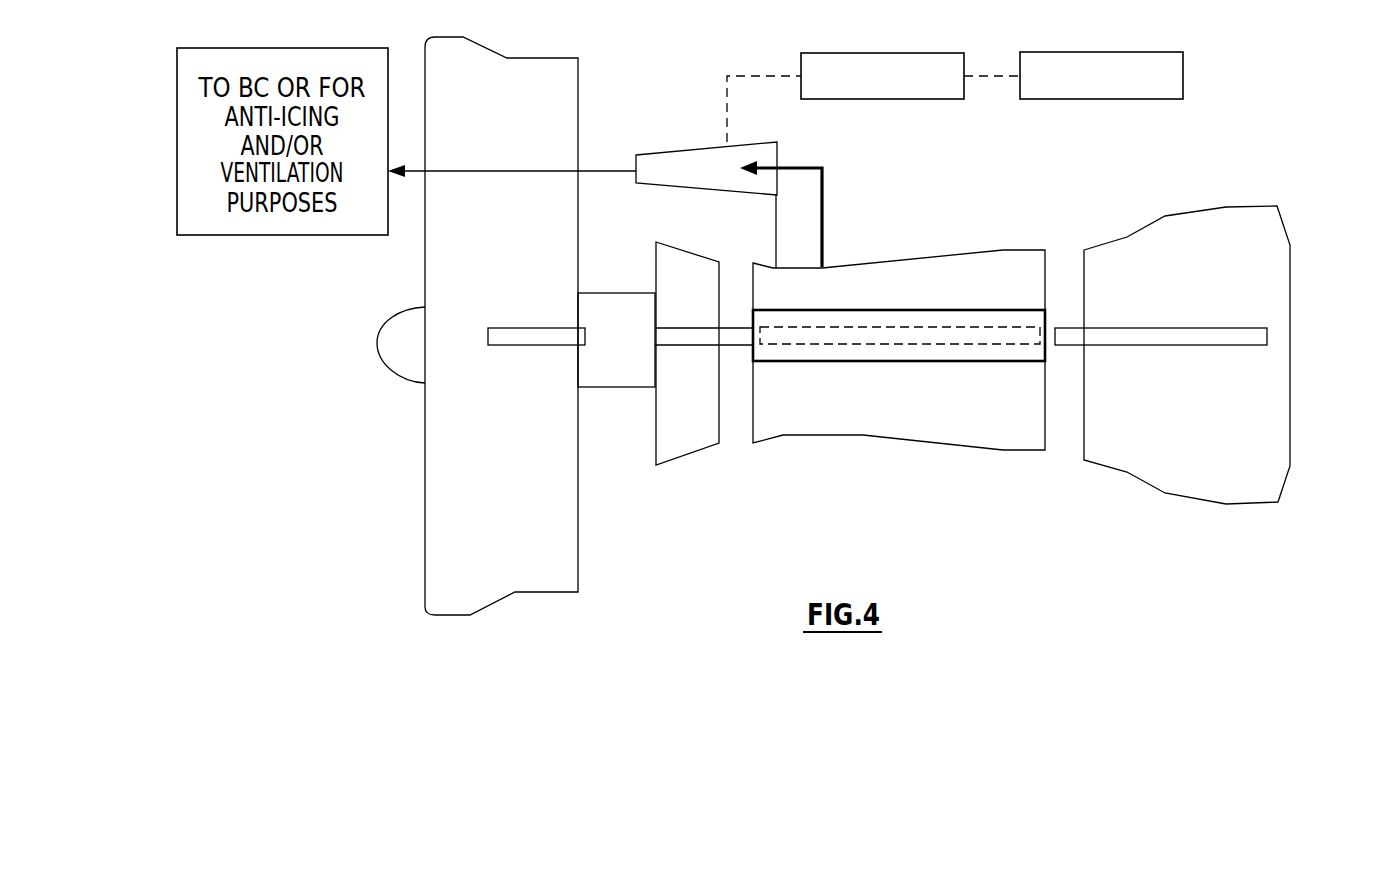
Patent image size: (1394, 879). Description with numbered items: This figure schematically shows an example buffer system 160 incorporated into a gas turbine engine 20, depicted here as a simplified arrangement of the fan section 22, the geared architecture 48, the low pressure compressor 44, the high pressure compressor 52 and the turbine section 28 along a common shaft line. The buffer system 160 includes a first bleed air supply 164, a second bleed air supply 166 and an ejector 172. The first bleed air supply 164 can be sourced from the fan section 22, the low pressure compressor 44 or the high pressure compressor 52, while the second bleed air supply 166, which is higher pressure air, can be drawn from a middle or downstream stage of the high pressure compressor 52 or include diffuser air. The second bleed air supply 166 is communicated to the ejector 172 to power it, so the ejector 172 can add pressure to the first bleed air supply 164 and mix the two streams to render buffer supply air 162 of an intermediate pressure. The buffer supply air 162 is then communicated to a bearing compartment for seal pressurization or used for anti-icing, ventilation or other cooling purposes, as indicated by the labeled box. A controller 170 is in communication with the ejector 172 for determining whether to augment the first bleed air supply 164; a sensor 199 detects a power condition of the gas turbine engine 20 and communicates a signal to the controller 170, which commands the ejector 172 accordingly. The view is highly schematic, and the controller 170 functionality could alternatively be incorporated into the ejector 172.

The gas turbine engine 20 is at (873, 326).
The fan section 22 is at (517, 511).
The turbine section 28 is at (1208, 429).
The low pressure compressor 44 is at (707, 419).
The geared architecture 48 is at (635, 354).
The high pressure compressor 52 is at (925, 419).
The buffer system 160 is at (785, 138).
The buffer supply air 162 is at (597, 170).
The first bleed air supply 164 is at (773, 240).
The second bleed air supply 166 is at (823, 225).
The controller 170 is at (884, 53).
The ejector 172 is at (672, 170).
The sensor 199 is at (1080, 52).